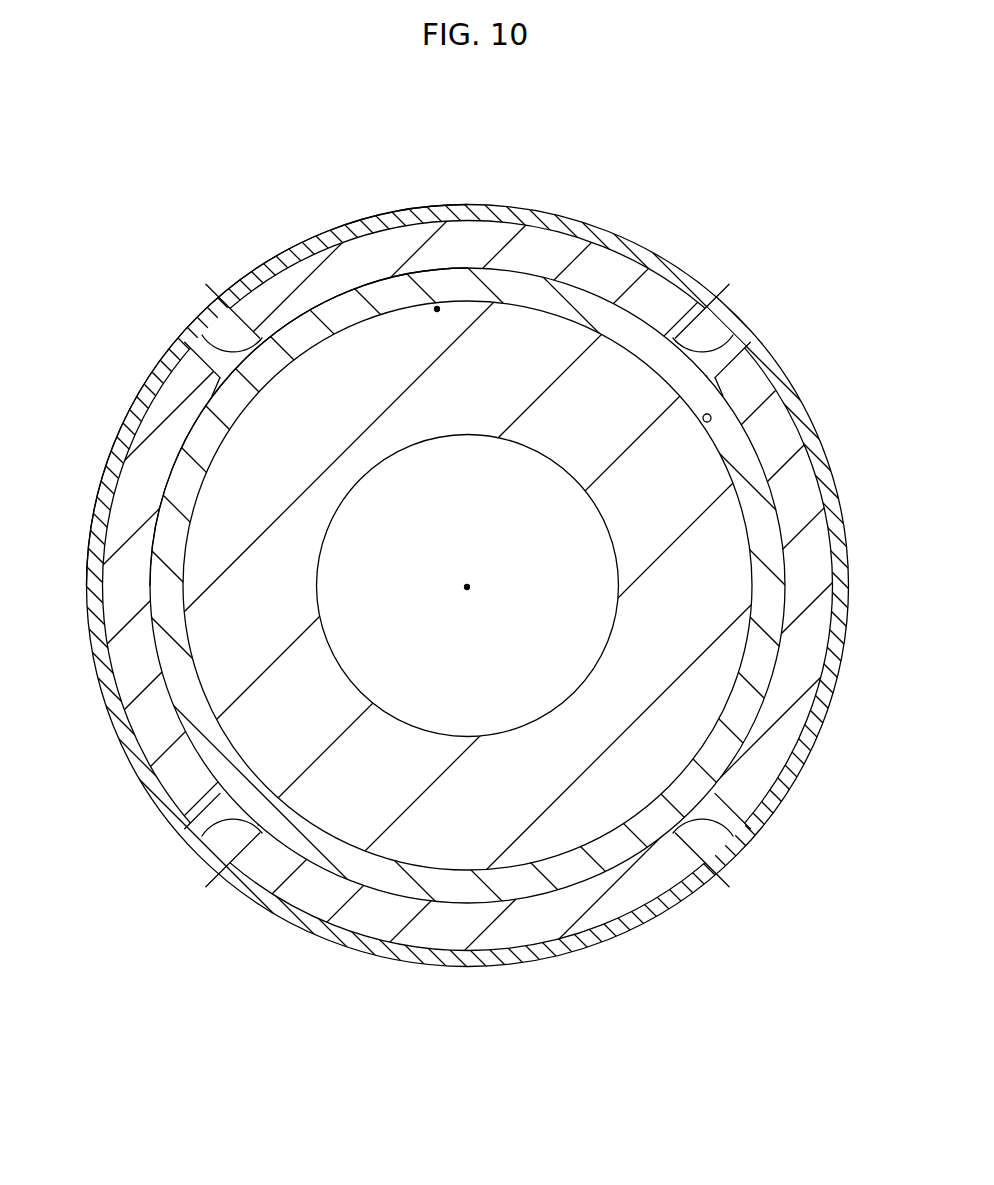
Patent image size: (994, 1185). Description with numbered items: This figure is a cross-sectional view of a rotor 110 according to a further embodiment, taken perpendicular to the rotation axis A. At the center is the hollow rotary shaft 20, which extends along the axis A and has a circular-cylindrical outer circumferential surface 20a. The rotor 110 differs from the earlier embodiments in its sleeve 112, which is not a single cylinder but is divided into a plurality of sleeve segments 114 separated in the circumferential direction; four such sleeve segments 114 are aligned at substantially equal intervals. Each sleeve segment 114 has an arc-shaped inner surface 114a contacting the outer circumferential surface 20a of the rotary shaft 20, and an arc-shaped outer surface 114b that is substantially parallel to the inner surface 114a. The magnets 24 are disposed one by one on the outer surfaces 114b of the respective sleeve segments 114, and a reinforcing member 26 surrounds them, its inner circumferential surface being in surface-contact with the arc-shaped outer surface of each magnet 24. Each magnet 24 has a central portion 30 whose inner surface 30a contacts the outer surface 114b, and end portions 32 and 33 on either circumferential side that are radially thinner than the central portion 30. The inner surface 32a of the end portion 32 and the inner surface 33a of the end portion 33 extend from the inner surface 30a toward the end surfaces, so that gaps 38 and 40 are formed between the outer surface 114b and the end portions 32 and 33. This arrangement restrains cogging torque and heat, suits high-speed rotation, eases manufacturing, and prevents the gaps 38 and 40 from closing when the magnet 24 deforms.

The rotor 110 is at (835, 115).
The rotary shaft 20 is at (557, 436).
The outer circumferential surface 20a is at (703, 425).
The magnet 24 is at (462, 208).
The reinforcing member 26 is at (404, 212).
The central portion 30 is at (450, 254).
The inner surface 30a is at (495, 270).
The end portion 32 is at (247, 318).
The inner surface 32a is at (265, 355).
The end portion 33 is at (681, 305).
The inner surface 33a is at (663, 368).
The gap 38 is at (240, 348).
The gap 40 is at (704, 348).
The sleeve 112 is at (437, 312).
The sleeve segment 114 is at (348, 314).
The inner surface 114a is at (196, 660).
The outer surface 114b is at (526, 262).
The rotation axis A is at (467, 587).